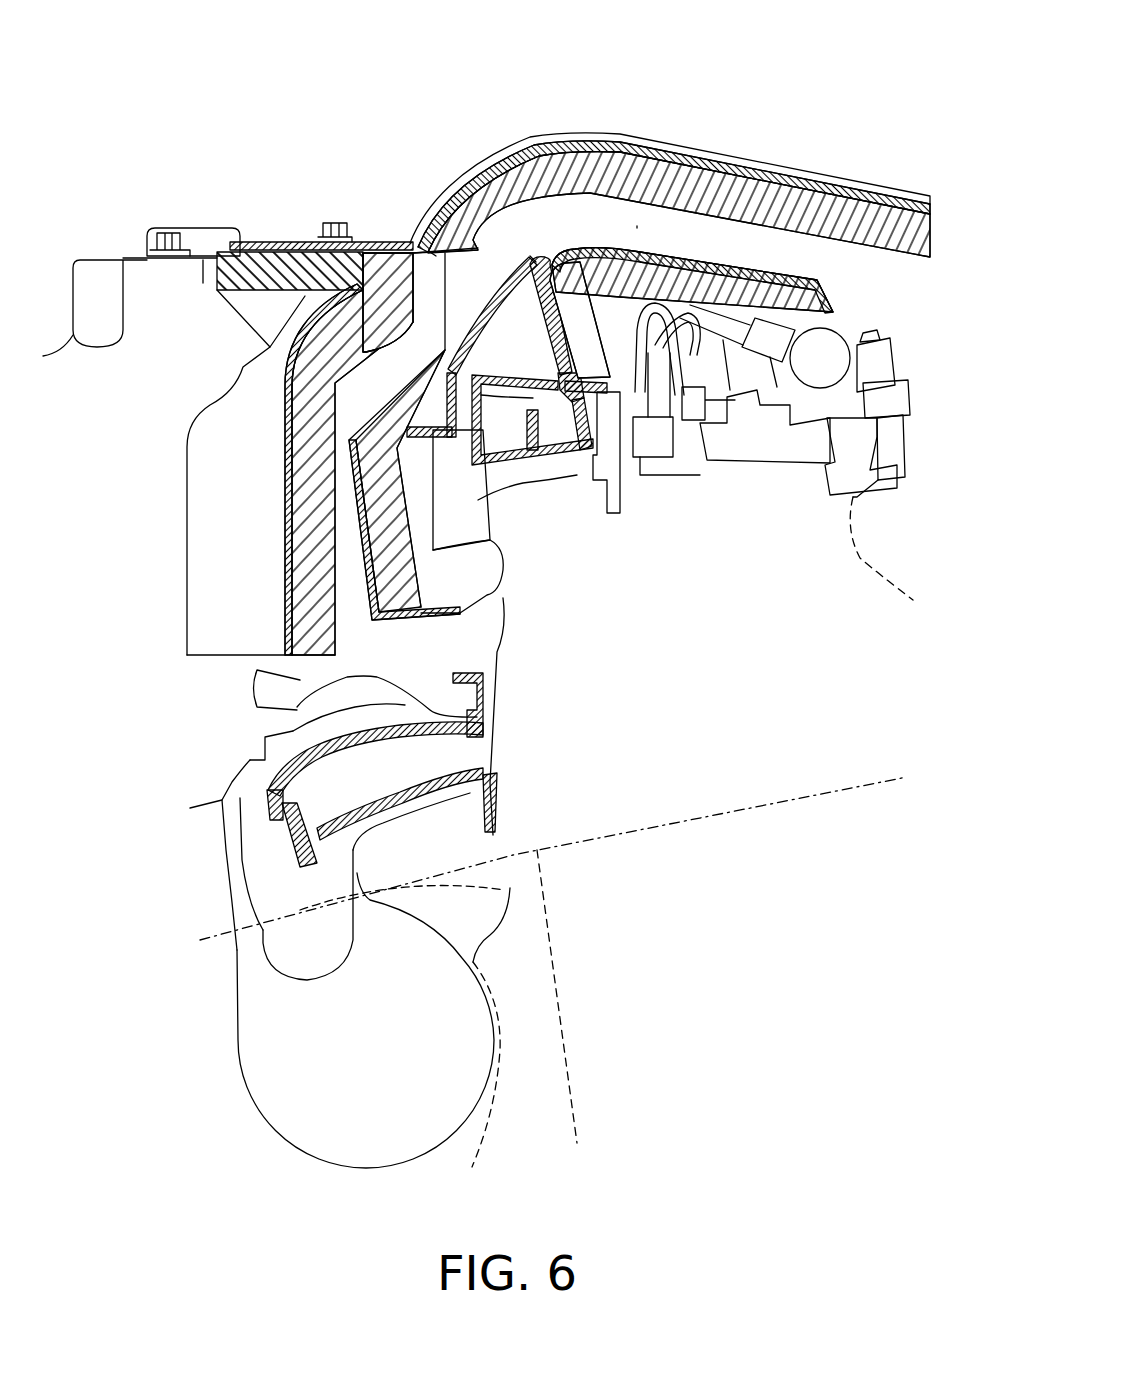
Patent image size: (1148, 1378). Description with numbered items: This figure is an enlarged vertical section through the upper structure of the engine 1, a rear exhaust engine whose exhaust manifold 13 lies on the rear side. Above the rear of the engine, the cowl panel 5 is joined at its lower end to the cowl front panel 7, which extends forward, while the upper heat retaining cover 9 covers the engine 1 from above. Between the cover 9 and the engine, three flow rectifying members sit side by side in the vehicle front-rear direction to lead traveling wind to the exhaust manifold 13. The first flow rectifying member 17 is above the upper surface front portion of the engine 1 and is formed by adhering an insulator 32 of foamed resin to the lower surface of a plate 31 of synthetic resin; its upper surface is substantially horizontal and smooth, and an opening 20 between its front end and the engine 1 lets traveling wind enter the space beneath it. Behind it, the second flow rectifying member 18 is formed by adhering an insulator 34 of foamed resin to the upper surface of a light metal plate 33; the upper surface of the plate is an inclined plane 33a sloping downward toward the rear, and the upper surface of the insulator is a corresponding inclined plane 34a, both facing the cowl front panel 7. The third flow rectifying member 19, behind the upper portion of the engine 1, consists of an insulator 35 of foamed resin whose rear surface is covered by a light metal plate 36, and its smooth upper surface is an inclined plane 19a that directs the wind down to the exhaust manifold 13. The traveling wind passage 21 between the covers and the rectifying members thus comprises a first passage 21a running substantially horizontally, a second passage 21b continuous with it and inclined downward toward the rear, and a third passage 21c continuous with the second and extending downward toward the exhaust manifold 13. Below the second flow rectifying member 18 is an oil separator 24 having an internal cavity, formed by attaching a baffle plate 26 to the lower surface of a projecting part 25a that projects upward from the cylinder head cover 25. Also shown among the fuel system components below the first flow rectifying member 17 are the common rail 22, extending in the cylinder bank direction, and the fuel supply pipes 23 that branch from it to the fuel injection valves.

The engine 1 is at (260, 937).
The cowl panel 5 is at (187, 497).
The cowl front panel 7 is at (95, 350).
The upper heat retaining cover 9 is at (836, 176).
The exhaust manifold 13 is at (333, 737).
The first flow rectifying member 17 is at (670, 246).
The second flow rectifying member 18 is at (531, 253).
The third flow rectifying member 19 is at (348, 435).
The inclined plane 19a is at (365, 244).
The opening 20 is at (852, 407).
The traveling wind passage 21 is at (660, 192).
The first passage 21a is at (637, 226).
The second passage 21b is at (433, 255).
The third passage 21c is at (287, 607).
The common rail 22 is at (820, 362).
The fuel supply pipes 23 is at (680, 440).
The oil separator 24 is at (405, 345).
The cylinder head cover 25 is at (783, 410).
The projecting part 25a is at (477, 503).
The baffle plate 26 is at (540, 452).
The plate 31 is at (583, 260).
The insulator 32 is at (735, 287).
The plate 33 is at (578, 455).
The inclined plane 33a is at (553, 470).
The insulator 34 is at (446, 268).
The inclined plane 34a is at (490, 300).
The insulator 35 is at (352, 598).
The plate 36 is at (350, 508).